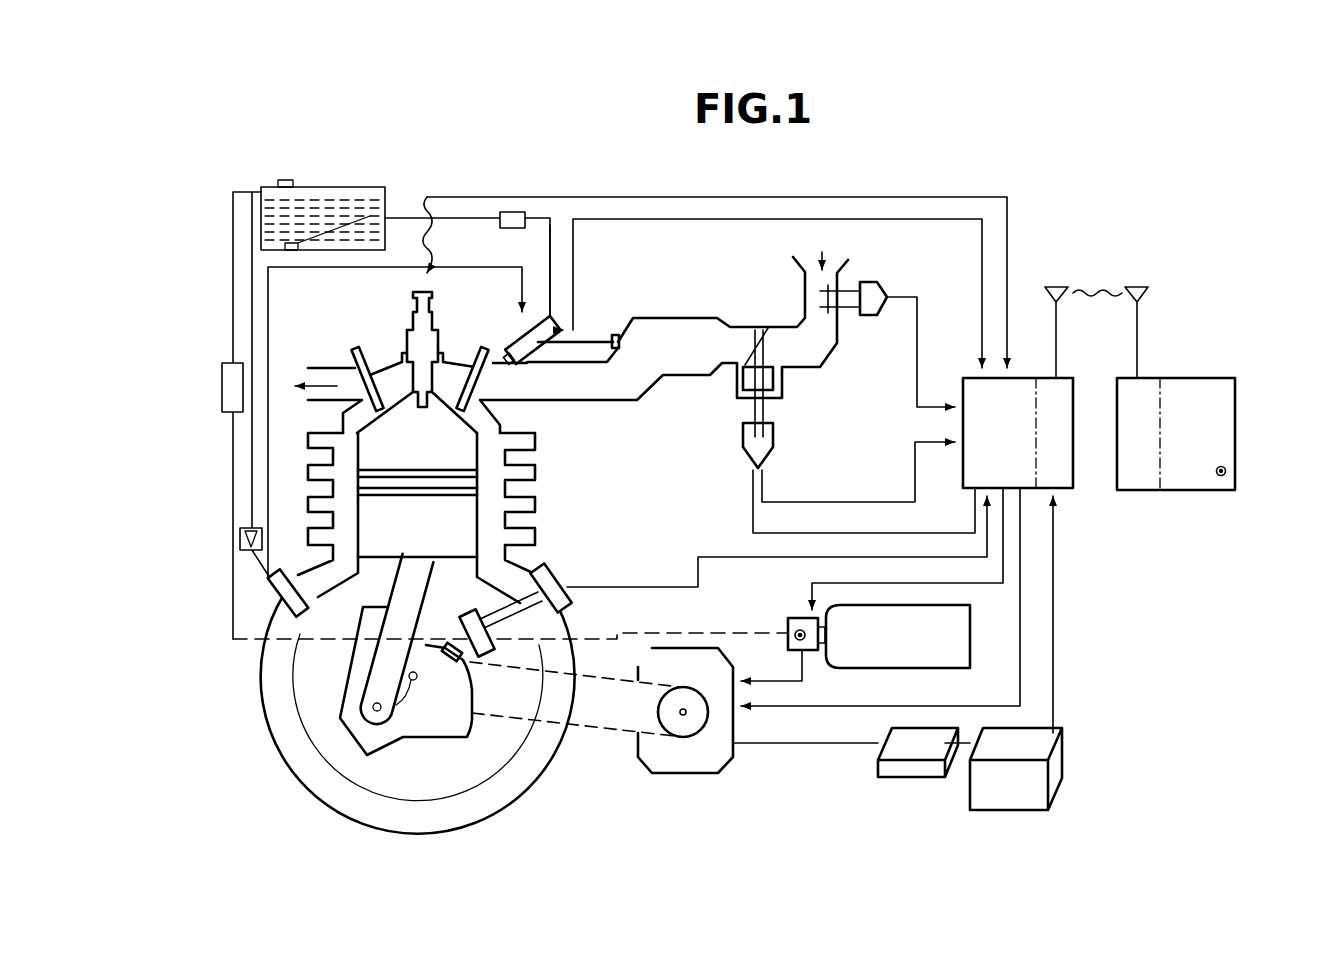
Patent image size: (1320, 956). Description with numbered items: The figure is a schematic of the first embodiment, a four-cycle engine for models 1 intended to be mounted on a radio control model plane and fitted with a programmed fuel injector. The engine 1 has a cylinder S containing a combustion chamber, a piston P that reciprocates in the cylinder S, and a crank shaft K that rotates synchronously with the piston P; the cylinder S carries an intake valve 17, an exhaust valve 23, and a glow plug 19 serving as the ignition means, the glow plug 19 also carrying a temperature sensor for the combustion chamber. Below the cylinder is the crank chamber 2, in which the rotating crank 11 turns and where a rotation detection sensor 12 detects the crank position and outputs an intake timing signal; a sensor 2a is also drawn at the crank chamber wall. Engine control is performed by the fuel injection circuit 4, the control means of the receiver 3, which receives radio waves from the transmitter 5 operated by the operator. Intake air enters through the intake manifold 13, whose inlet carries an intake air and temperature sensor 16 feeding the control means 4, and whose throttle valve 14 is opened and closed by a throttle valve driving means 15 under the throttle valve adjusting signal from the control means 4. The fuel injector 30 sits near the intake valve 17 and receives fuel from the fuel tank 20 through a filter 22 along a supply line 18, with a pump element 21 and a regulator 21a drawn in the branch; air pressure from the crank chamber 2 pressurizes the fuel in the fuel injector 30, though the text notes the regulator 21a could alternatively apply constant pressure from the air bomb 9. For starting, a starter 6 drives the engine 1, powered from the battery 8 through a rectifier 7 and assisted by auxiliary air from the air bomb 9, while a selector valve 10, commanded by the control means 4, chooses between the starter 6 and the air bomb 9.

The engine for models 1 is at (311, 352).
The crank chamber 2 is at (493, 752).
The crank angle sensor 2a is at (300, 617).
The receiver 3 is at (1068, 486).
The fuel injection circuit 4 is at (1022, 393).
The transmitter 5 is at (1170, 490).
The starter 6 is at (676, 767).
The rectifier 7 is at (903, 777).
The battery 8 is at (983, 810).
The air bomb 9 is at (972, 632).
The selector valve 10 is at (788, 626).
The crank 11 is at (423, 727).
The rotation detection sensor 12 is at (560, 575).
The intake manifold 13 is at (660, 338).
The throttle valve 14 is at (752, 353).
The throttle valve driving means 15 is at (774, 438).
The intake air and temperature sensor 16 is at (882, 284).
The intake valve 17 is at (467, 372).
The fuel supply pipe 18 is at (552, 233).
The glow plug 19 is at (407, 338).
The fuel tank 20 is at (340, 194).
The fuel pump 21 is at (243, 530).
The regulator 21a is at (220, 372).
The filter 22 is at (507, 212).
The exhaust valve 23 is at (357, 360).
The fuel injector 30 is at (533, 327).
The cylinder S is at (342, 443).
The piston P is at (380, 508).
The crank shaft K is at (397, 708).